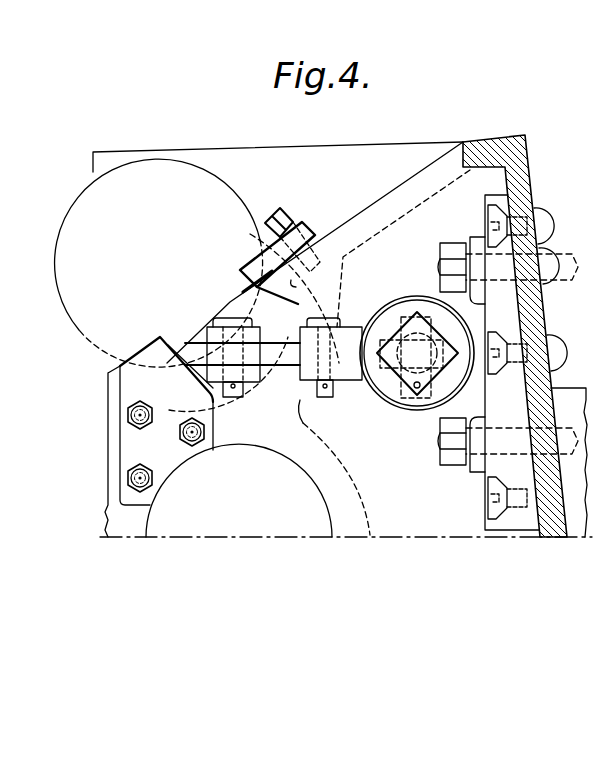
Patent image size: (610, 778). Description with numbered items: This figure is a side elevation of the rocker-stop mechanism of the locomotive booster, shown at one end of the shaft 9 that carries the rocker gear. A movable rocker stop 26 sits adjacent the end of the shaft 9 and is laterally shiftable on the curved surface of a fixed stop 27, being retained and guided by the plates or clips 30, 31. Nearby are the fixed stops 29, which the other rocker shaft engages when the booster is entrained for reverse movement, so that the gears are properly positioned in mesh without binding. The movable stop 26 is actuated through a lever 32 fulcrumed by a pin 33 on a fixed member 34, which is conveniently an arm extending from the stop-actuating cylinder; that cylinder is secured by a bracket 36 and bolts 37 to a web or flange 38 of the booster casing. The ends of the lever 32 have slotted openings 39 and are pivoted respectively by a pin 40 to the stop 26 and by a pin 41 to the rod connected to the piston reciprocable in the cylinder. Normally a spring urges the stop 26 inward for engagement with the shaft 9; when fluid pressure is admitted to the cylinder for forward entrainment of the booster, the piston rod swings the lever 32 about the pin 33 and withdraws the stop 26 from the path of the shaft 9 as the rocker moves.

The shaft 9 is at (59, 228).
The movable rocker stop 26 is at (277, 268).
The fixed stop 27 is at (296, 287).
The fixed stop 29 is at (272, 458).
The plate or clip 30 is at (133, 367).
The plate or clip 31 is at (268, 252).
The lever 32 is at (242, 355).
The pin 33 is at (325, 398).
The fixed member 34 is at (352, 327).
The bracket 36 is at (471, 236).
The bolt 37 is at (440, 258).
The web or flange 38 is at (530, 304).
The slotted opening 39 is at (241, 404).
The pin 40 is at (255, 393).
The pin 41 is at (422, 413).